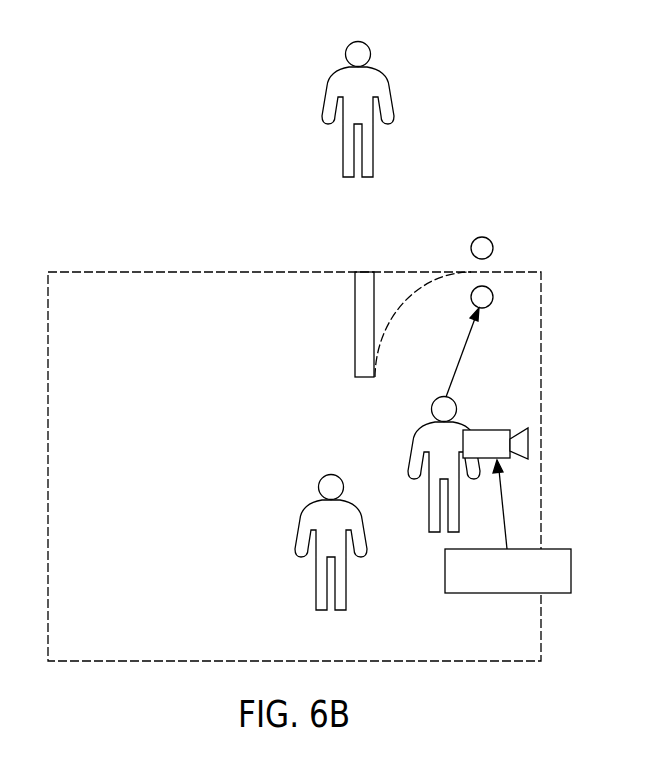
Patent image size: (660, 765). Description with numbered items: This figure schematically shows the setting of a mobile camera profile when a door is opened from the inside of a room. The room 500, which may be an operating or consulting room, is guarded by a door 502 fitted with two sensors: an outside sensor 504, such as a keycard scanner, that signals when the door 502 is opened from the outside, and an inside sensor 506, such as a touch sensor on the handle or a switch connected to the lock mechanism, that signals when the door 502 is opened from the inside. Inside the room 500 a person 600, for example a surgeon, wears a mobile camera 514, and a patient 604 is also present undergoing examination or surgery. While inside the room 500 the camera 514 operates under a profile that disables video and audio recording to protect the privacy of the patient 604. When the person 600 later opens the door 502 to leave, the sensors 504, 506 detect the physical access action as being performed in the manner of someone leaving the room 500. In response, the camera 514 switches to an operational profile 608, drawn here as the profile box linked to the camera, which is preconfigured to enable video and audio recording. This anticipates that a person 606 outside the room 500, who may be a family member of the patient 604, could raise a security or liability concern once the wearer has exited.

The room 500 is at (293, 272).
The door 502 is at (355, 322).
The outside sensor 504 is at (494, 248).
The inside sensor 506 is at (493, 297).
The mobile camera 514 is at (530, 442).
The person 600 is at (415, 456).
The patient 604 is at (300, 535).
The person outside the room 606 is at (327, 100).
The operational profile 608 is at (571, 572).